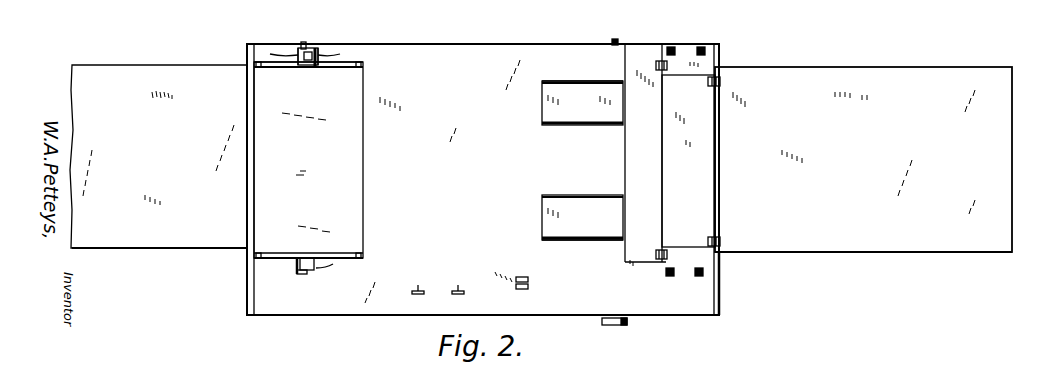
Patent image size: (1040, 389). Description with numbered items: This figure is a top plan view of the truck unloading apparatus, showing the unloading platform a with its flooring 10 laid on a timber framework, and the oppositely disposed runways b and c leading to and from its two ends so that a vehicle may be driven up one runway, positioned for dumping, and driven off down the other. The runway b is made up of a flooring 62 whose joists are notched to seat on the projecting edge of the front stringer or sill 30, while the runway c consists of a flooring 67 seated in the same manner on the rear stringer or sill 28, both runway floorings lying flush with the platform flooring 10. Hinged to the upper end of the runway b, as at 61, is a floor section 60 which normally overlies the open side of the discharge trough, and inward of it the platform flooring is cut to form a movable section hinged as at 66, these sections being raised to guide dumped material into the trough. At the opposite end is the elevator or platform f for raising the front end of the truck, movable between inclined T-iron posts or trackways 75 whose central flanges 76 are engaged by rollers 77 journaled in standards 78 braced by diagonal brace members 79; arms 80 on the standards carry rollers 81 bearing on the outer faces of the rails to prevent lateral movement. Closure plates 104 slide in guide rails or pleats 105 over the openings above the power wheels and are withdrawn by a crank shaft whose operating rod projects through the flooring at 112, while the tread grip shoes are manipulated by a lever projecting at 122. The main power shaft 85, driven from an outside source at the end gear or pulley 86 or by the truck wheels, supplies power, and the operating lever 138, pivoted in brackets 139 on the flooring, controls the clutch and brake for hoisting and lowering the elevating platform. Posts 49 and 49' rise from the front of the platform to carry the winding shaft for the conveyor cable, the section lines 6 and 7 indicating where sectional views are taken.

The flooring 10 is at (372, 310).
The stringer or sill 28 is at (247, 292).
The stringer or sill 30 is at (720, 294).
The runway c is at (158, 156).
The flooring 67 is at (178, 248).
The runway b is at (863, 159).
The flooring 62 is at (862, 252).
The elevator or platform f is at (308, 160).
The brace members 79 is at (343, 68).
The section line 7- 7 is at (290, 79).
The posts or trackways 75 is at (315, 50).
The flanges 76 is at (319, 51).
The rollers 77 is at (302, 160).
The standards 78 is at (308, 67).
The arms 80 is at (298, 53).
The rollers 81 is at (303, 42).
The unloading platform a is at (456, 169).
The closure plates or sections 104 is at (585, 248).
The guide rails or pleats 105 is at (575, 82).
The main power shaft 85 is at (615, 40).
The floor section 60 is at (688, 161).
The section line 6- 6 is at (752, 88).
The hinge 66 is at (659, 71).
The hinge 61 is at (720, 84).
The post 49' is at (663, 162).
The post 49 is at (698, 163).
The operating arm or lever projection 122 is at (422, 284).
The operating rod projection 112 is at (463, 284).
The operating lever 138 is at (516, 280).
The brackets 139 is at (529, 287).
The end gear or pulley 86 is at (620, 325).